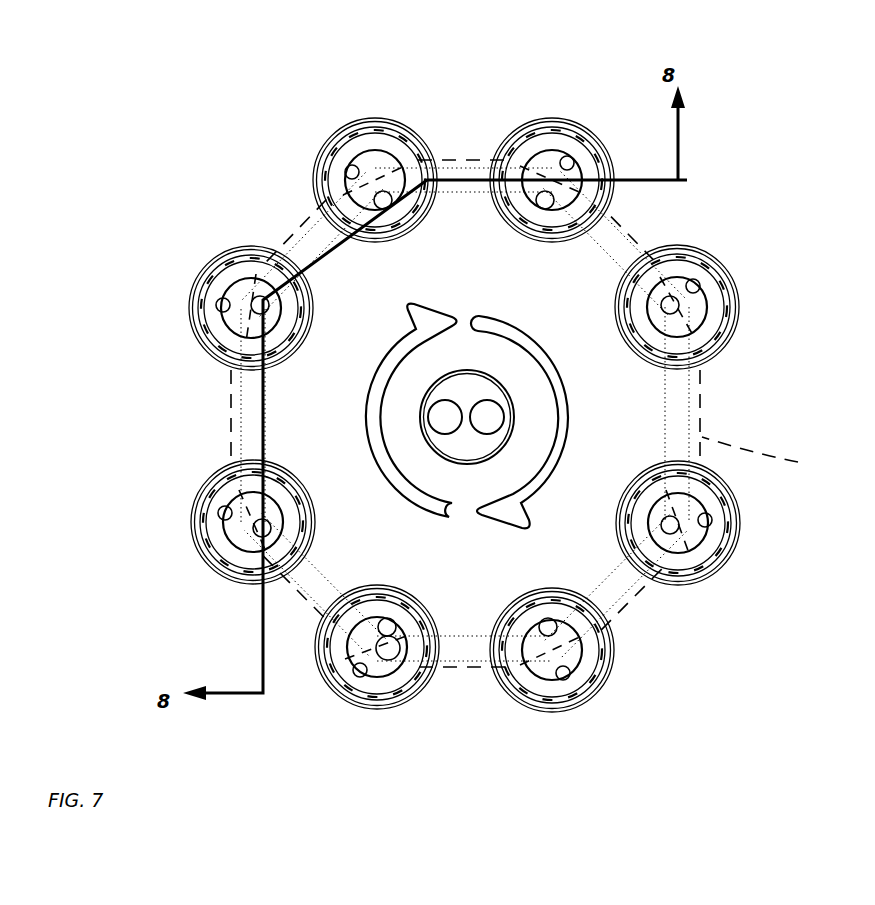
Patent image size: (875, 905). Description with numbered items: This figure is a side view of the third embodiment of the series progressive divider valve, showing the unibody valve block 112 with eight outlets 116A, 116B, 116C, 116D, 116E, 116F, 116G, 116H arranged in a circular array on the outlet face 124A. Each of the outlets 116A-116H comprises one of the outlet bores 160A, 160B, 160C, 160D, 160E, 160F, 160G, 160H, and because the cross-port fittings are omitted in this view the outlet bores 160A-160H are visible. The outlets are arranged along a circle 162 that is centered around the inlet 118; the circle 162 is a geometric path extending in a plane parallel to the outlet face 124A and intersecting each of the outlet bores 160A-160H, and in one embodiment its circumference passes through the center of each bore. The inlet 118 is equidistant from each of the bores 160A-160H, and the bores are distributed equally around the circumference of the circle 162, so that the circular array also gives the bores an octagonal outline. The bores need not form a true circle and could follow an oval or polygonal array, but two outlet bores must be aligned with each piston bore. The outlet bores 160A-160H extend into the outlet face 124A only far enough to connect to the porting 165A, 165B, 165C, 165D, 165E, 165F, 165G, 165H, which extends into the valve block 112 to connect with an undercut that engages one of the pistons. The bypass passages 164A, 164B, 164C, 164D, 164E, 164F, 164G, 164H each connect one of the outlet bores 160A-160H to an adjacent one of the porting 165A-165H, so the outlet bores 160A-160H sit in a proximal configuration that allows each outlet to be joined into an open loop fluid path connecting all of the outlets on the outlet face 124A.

The valve block 112 is at (657, 687).
The outlet 116A is at (198, 558).
The outlet 116B is at (197, 350).
The outlet 116C is at (352, 117).
The outlet 116D is at (539, 117).
The outlet 116E is at (742, 302).
The outlet 116F is at (742, 565).
The outlet 116G is at (540, 707).
The outlet 116H is at (395, 707).
The inlet 118 is at (482, 383).
The outlet face 124A is at (465, 414).
The outlet bore 160A is at (226, 523).
The outlet bore 160B is at (226, 306).
The outlet bore 160C is at (360, 176).
The outlet bore 160D is at (569, 166).
The outlet bore 160E is at (692, 290).
The outlet bore 160F is at (706, 520).
The outlet bore 160G is at (565, 673).
The outlet bore 160H is at (360, 672).
The circle 162 is at (770, 455).
The bypass passage 164A is at (240, 415).
The bypass passage 164B is at (318, 256).
The bypass passage 164C is at (463, 164).
The bypass passage 164D is at (643, 235).
The bypass passage 164E is at (702, 418).
The bypass passage 164F is at (607, 590).
The bypass passage 164G is at (465, 665).
The bypass passage 164H is at (300, 607).
The porting 165A is at (270, 530).
The porting 165B is at (266, 311).
The porting 165C is at (386, 206).
The porting 165D is at (543, 203).
The porting 165E is at (667, 305).
The porting 165F is at (668, 527).
The porting 165G is at (548, 625).
The porting 165H is at (389, 624).